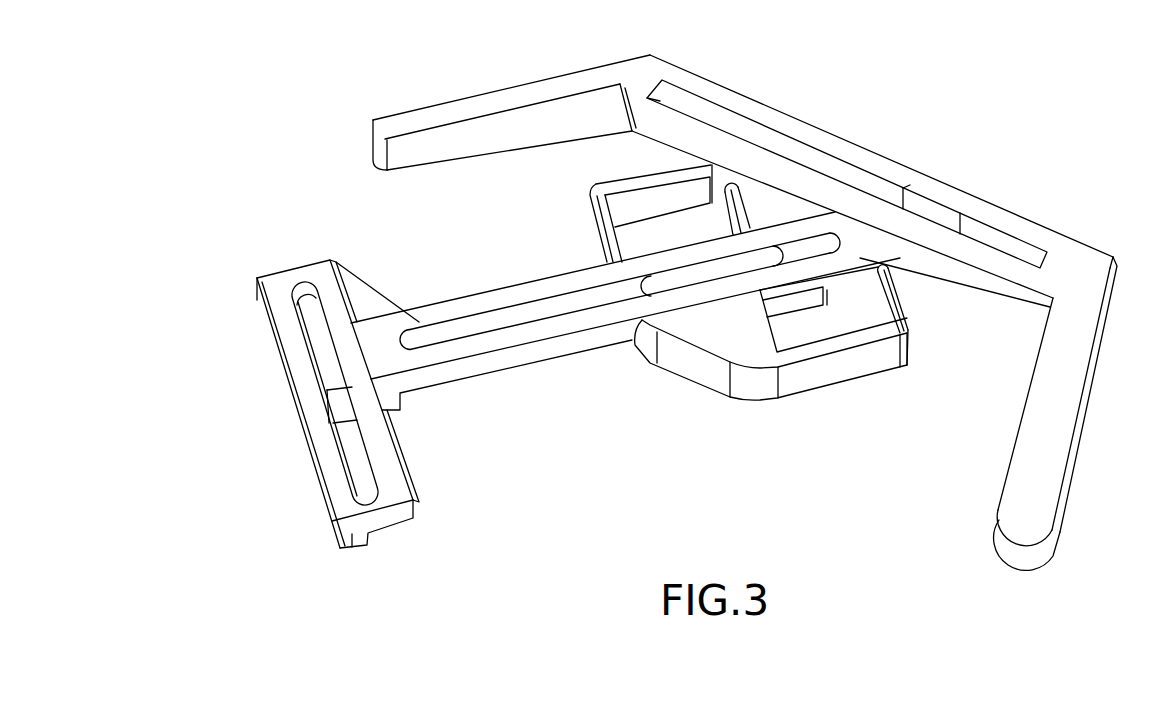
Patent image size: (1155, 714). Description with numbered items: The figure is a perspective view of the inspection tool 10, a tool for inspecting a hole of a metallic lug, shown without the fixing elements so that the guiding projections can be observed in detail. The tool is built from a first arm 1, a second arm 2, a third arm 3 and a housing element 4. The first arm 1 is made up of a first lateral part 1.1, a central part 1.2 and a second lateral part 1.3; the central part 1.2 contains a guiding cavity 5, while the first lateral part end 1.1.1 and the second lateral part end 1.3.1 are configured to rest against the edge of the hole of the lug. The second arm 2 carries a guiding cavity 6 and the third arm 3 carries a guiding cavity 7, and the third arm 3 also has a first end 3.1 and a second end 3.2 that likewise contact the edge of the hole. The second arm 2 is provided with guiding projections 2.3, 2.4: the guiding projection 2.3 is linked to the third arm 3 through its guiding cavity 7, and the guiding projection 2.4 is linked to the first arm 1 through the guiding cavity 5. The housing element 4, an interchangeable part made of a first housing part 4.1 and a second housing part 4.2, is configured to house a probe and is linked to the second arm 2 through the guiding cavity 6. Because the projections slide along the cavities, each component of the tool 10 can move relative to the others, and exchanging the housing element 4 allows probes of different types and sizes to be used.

The first arm 1 is at (914, 98).
The first lateral part 1.1 is at (570, 76).
The first lateral part end 1.1.1 is at (373, 143).
The central part 1.2 is at (1003, 207).
The second lateral part 1.3 is at (1043, 413).
The second lateral part end 1.3.1 is at (1015, 557).
The second arm 2 is at (508, 360).
The guiding projection 2.3 is at (320, 357).
The guiding projection 2.4 is at (928, 208).
The third arm 3 is at (283, 387).
The first end 3.1 is at (315, 258).
The second end 3.2 is at (352, 545).
The housing element 4 is at (674, 403).
The first housing part 4.1 is at (765, 405).
The second housing part 4.2 is at (571, 175).
The guiding cavity 5 is at (767, 138).
The guiding cavity 6 is at (495, 318).
The guiding cavity 7 is at (349, 449).
The inspection tool 10 is at (557, 563).